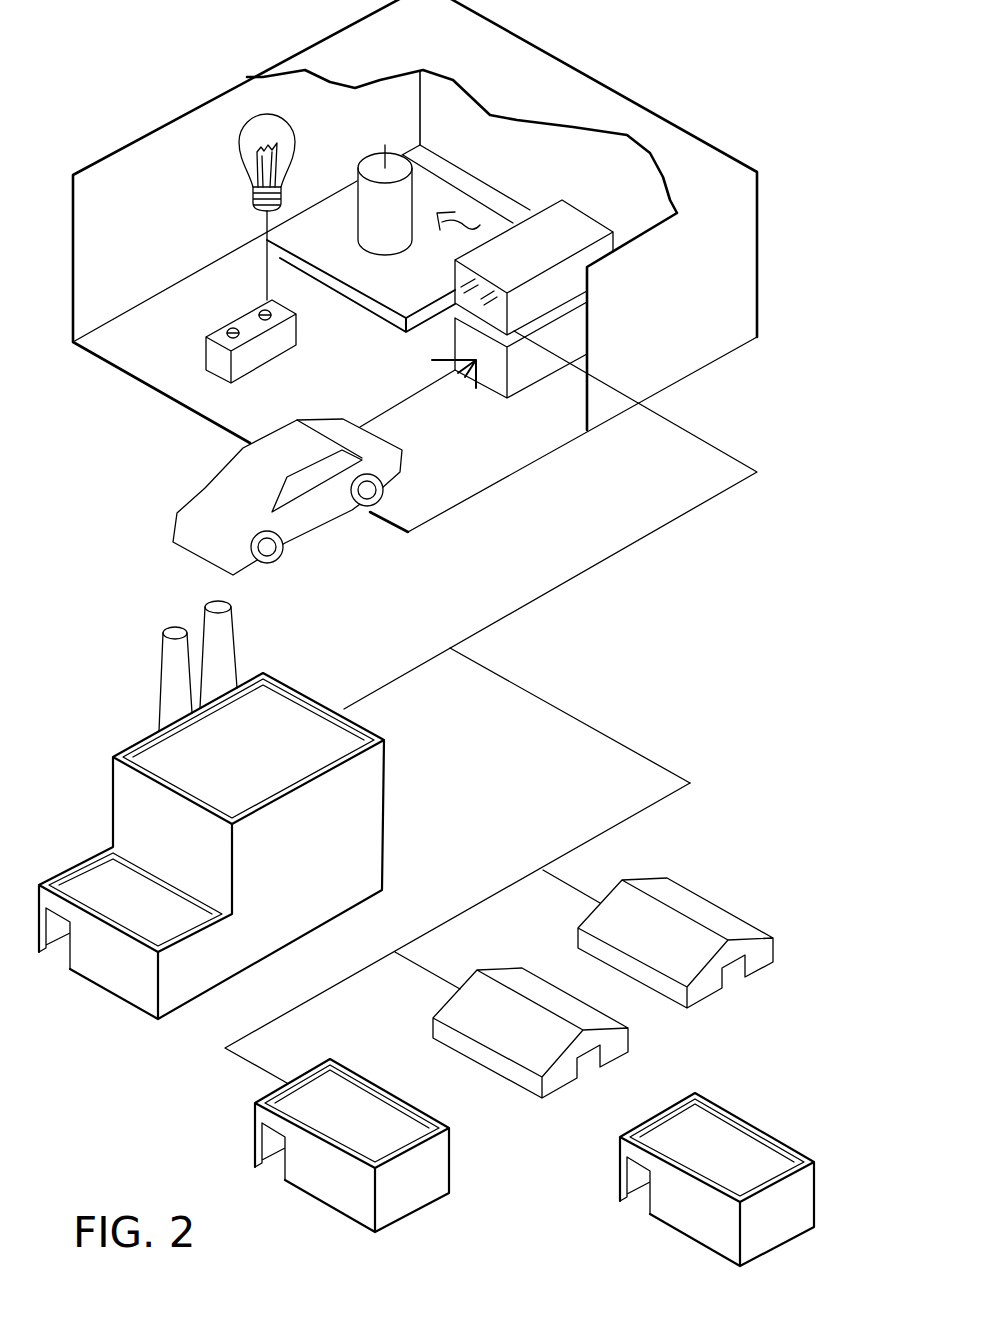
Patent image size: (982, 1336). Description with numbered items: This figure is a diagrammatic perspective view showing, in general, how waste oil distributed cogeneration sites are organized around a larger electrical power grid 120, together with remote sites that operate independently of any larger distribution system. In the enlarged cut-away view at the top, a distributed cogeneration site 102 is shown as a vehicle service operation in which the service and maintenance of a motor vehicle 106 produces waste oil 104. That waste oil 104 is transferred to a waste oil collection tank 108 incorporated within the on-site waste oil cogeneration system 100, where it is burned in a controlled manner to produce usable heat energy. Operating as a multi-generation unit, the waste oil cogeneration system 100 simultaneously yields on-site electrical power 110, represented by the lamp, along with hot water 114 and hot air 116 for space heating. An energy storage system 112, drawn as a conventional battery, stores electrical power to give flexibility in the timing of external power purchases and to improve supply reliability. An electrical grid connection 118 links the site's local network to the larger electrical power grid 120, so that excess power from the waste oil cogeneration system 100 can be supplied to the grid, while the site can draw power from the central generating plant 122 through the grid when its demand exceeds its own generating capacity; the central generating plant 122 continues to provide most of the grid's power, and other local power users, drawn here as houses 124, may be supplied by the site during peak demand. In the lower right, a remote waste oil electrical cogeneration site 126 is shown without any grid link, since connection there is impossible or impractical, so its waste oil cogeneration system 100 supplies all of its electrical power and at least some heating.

The waste oil cogeneration system 100 is at (585, 203).
The distributed cogeneration site 102 is at (205, 88).
The waste oil 104 is at (398, 404).
The motor vehicle 106 is at (201, 491).
The waste oil collection tank 108 is at (516, 398).
The on-site electrical power 110 is at (246, 176).
The energy storage system 112 is at (207, 361).
The hot water 114 is at (372, 156).
The hot air 116 is at (440, 230).
The electrical grid connection 118 is at (692, 428).
The larger electrical power grid 120 is at (478, 632).
The central generating plant 122 is at (354, 829).
The house 124 is at (759, 967).
The remote waste oil electrical cogeneration site 126 is at (718, 1254).